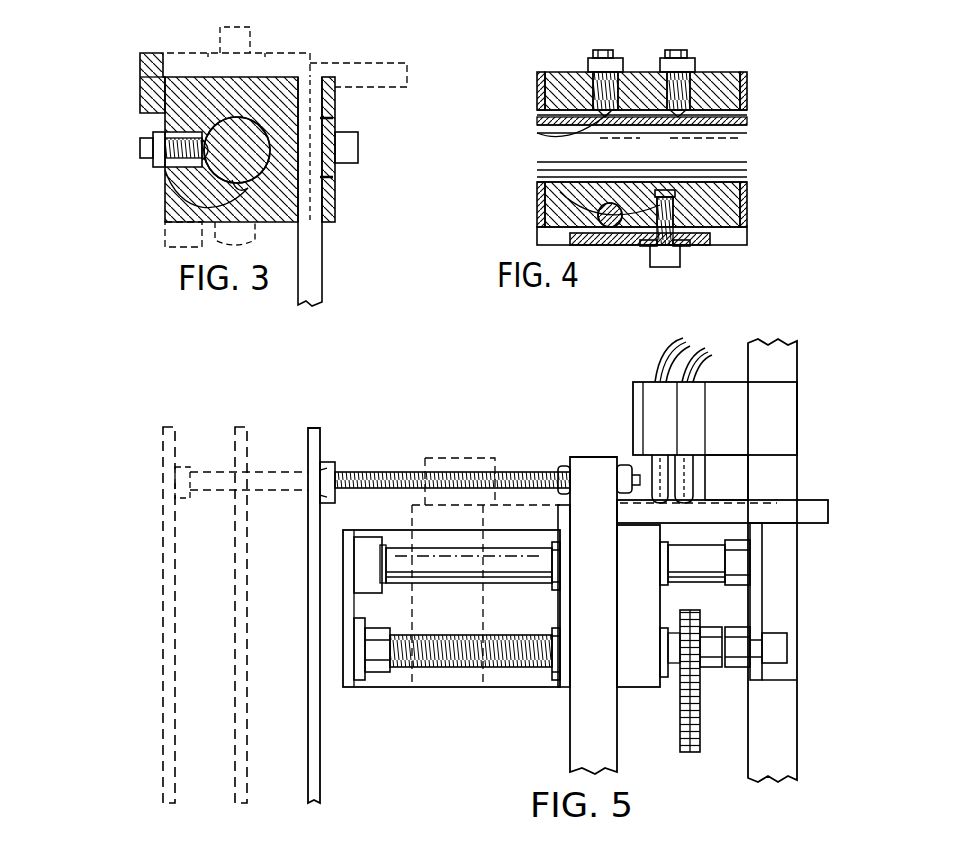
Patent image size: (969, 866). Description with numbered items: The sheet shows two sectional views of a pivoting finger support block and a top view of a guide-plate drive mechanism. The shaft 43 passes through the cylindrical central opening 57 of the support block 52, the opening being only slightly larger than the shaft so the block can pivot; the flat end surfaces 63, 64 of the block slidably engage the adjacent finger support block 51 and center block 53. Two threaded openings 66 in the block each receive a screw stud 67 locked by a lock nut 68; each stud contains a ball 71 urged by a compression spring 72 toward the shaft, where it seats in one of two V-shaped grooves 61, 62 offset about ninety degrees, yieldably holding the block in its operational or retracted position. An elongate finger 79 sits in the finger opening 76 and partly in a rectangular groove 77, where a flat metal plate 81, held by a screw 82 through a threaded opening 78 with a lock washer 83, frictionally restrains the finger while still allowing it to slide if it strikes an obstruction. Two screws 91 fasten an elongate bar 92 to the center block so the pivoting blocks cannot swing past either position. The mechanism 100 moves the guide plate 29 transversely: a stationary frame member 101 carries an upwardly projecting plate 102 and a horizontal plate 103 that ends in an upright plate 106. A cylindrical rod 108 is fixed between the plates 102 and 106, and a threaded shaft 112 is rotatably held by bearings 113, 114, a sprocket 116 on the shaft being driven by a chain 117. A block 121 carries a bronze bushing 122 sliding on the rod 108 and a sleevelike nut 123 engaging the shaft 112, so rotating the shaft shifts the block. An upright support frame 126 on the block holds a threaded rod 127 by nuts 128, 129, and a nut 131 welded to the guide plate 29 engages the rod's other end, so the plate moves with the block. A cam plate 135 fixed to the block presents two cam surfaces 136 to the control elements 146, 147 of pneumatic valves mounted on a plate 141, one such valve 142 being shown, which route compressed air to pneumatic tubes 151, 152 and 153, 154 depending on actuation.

In FIG. 5, the guide plate 29 is at (310, 447).
In FIG. 3, the shaft 43 is at (243, 130).
In FIG. 4, the shaft 43 is at (730, 147).
In FIG. 4, the finger support block 51 is at (537, 100).
In FIG. 3, the support block 52 is at (275, 88).
In FIG. 4, the support block 52 is at (707, 67).
In FIG. 4, the center block 53 is at (747, 87).
In FIG. 3, the cylindrical central opening 57 is at (272, 205).
In FIG. 4, the cylindrical central opening 57 is at (720, 173).
In FIG. 3, the groove 61 is at (167, 227).
In FIG. 4, the groove 61 is at (745, 103).
In FIG. 3, the groove 62 is at (237, 188).
In FIG. 4, the end surface 63 is at (540, 100).
In FIG. 4, the end surface 64 is at (743, 72).
In FIG. 3, the threaded opening 66 is at (160, 168).
In FIG. 4, the threaded opening 66 is at (587, 67).
In FIG. 3, the screw stud 67 is at (140, 143).
In FIG. 4, the screw stud 67 is at (610, 60).
In FIG. 3, the lock nut 68 is at (157, 158).
In FIG. 4, the lock nut 68 is at (590, 60).
In FIG. 3, the ball 71 is at (203, 155).
In FIG. 4, the ball 71 is at (540, 133).
In FIG. 3, the compression spring 72 is at (156, 135).
In FIG. 3, the finger opening 76 is at (303, 78).
In FIG. 4, the finger opening 76 is at (600, 222).
In FIG. 3, the groove 77 is at (336, 175).
In FIG. 4, the groove 77 is at (745, 238).
In FIG. 4, the threaded opening 78 is at (677, 213).
In FIG. 3, the finger 79 is at (318, 265).
In FIG. 4, the finger 79 is at (623, 247).
In FIG. 3, the plate 81 is at (336, 125).
In FIG. 4, the plate 81 is at (710, 242).
In FIG. 3, the screw 82 is at (358, 148).
In FIG. 4, the screw 82 is at (660, 263).
In FIG. 4, the lock washer 83 is at (683, 247).
In FIG. 3, the screw 91 is at (152, 55).
In FIG. 3, the bar 92 is at (165, 56).
In FIG. 5, the mechanism 100 is at (147, 647).
In FIG. 5, the frame member 101 is at (783, 752).
In FIG. 5, the plate 102 is at (755, 607).
In FIG. 5, the plate 103 is at (427, 680).
In FIG. 5, the plate 106 is at (347, 662).
In FIG. 5, the rod 108 is at (438, 560).
In FIG. 5, the threaded shaft 112 is at (462, 660).
In FIG. 5, the bearing 113 is at (377, 655).
In FIG. 5, the bearing 114 is at (737, 652).
In FIG. 5, the sprocket 116 is at (708, 653).
In FIG. 5, the chain 117 is at (681, 727).
In FIG. 5, the block 121 is at (635, 662).
In FIG. 5, the bushing 122 is at (553, 590).
In FIG. 5, the nut 123 is at (553, 677).
In FIG. 5, the support frame 126 is at (585, 748).
In FIG. 5, the threaded rod 127 is at (402, 468).
In FIG. 5, the nut 128 is at (563, 475).
In FIG. 5, the nut 129 is at (623, 463).
In FIG. 5, the nut 131 is at (332, 468).
In FIG. 5, the cam plate 135 is at (817, 513).
In FIG. 5, the cam surface 136 is at (770, 500).
In FIG. 5, the plate 141 is at (658, 403).
In FIG. 5, the pneumatic valve 142 is at (690, 427).
In FIG. 5, the control element 146 is at (656, 467).
In FIG. 5, the control element 147 is at (680, 485).
In FIG. 5, the pneumatic tube 151 is at (668, 348).
In FIG. 5, the pneumatic tube 152 is at (673, 367).
In FIG. 5, the pneumatic tube 153 is at (700, 350).
In FIG. 5, the pneumatic tube 154 is at (705, 352).